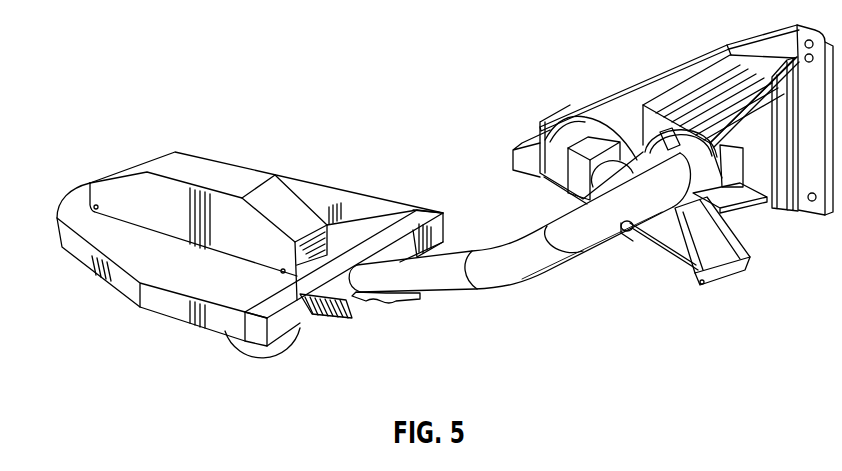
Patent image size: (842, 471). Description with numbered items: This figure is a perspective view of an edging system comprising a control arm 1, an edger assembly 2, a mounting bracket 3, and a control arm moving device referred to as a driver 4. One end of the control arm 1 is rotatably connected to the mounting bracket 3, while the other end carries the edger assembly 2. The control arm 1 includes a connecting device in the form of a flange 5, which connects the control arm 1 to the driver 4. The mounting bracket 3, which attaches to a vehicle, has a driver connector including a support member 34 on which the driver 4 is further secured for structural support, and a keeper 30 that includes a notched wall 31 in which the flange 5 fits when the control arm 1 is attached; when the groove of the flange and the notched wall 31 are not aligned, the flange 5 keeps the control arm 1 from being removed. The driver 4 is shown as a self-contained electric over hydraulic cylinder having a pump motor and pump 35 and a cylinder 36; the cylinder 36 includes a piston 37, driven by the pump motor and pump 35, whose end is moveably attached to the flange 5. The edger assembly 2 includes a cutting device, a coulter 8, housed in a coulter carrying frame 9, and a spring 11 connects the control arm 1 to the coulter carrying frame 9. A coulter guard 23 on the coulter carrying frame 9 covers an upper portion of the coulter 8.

The control arm 1 is at (535, 277).
The edger assembly 2 is at (77, 190).
The mounting bracket 3 is at (785, 40).
The driver 4 is at (538, 134).
The flange 5 is at (748, 258).
The coulter 8 is at (256, 354).
The coulter carrying frame 9 is at (313, 268).
The spring 11 is at (370, 301).
The coulter guard 23 is at (200, 174).
The keeper 30 is at (797, 211).
The notched wall 31 is at (757, 208).
The support member 34 is at (630, 88).
The pump motor and pump 35 is at (572, 111).
The cylinder 36 is at (550, 188).
The piston 37 is at (675, 257).